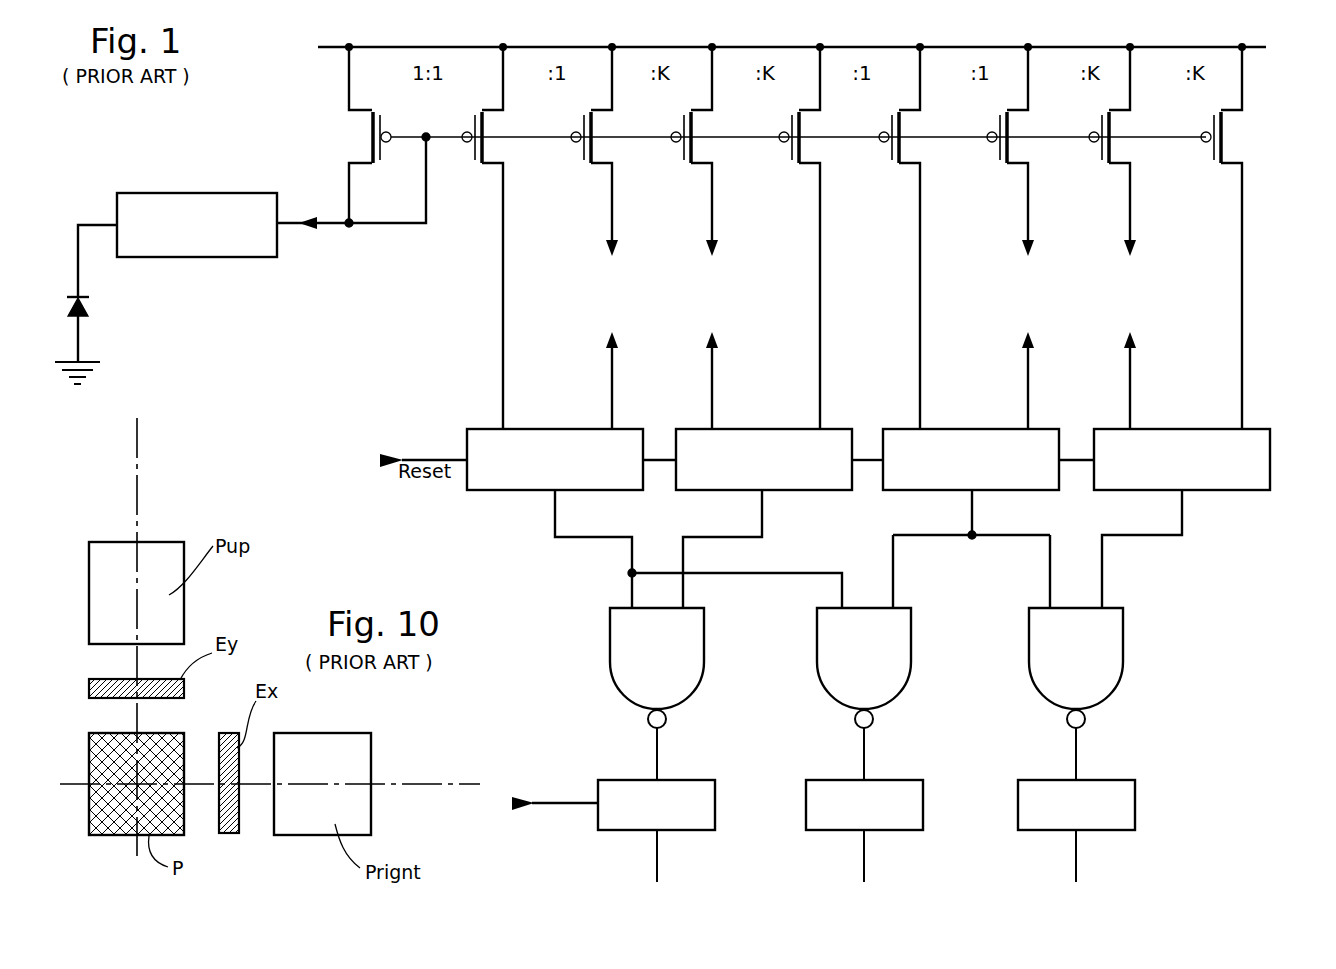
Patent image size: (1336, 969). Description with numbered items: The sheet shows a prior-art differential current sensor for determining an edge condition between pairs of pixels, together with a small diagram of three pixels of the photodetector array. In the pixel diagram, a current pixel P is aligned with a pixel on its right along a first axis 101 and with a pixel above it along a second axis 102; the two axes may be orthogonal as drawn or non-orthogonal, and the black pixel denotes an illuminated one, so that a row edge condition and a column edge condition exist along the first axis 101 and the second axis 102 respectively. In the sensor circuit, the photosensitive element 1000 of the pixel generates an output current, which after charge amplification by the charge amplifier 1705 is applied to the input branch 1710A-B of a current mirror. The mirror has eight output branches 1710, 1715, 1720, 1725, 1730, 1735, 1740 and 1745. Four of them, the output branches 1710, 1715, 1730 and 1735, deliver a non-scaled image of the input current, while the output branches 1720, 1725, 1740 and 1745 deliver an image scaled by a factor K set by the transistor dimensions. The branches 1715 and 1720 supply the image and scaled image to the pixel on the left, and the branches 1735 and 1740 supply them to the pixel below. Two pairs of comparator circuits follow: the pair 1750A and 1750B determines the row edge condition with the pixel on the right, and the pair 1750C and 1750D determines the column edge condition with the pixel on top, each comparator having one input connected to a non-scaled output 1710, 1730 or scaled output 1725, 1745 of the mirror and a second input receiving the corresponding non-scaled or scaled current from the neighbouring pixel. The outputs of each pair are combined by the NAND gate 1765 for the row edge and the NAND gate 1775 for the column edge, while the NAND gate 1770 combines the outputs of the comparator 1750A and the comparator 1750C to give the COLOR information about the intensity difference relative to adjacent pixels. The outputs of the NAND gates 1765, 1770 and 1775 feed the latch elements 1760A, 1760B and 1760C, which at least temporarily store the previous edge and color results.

In FIG. 1, the photosensitive element 1000 is at (90, 311).
In FIG. 1, the charge amplifier 1705 is at (193, 193).
In FIG. 1, the input branch 1710A-B is at (426, 190).
In FIG. 1, the output branch 1710 is at (504, 188).
In FIG. 1, the output branch 1715 is at (613, 188).
In FIG. 1, the output branch 1720 is at (713, 188).
In FIG. 1, the output branch 1725 is at (821, 188).
In FIG. 1, the output branch 1730 is at (921, 188).
In FIG. 1, the output branch 1735 is at (1029, 188).
In FIG. 1, the output branch 1740 is at (1131, 188).
In FIG. 1, the output branch 1745 is at (1243, 188).
In FIG. 1, the comparator circuit 1750A is at (547, 429).
In FIG. 1, the comparator circuit 1750B is at (756, 429).
In FIG. 1, the comparator circuit 1750C is at (963, 429).
In FIG. 1, the comparator circuit 1750D is at (1174, 429).
In FIG. 1, the logic NAND gate 1765 is at (705, 645).
In FIG. 1, the logic NAND gate 1770 is at (912, 645).
In FIG. 1, the logic NAND gate 1775 is at (1124, 645).
In FIG. 1, the latch element 1760A is at (626, 780).
In FIG. 1, the latch element 1760B is at (834, 780).
In FIG. 1, the latch element 1760C is at (1046, 780).
In FIG. 10, the first axis 101 is at (423, 780).
In FIG. 10, the second axis 102 is at (138, 470).